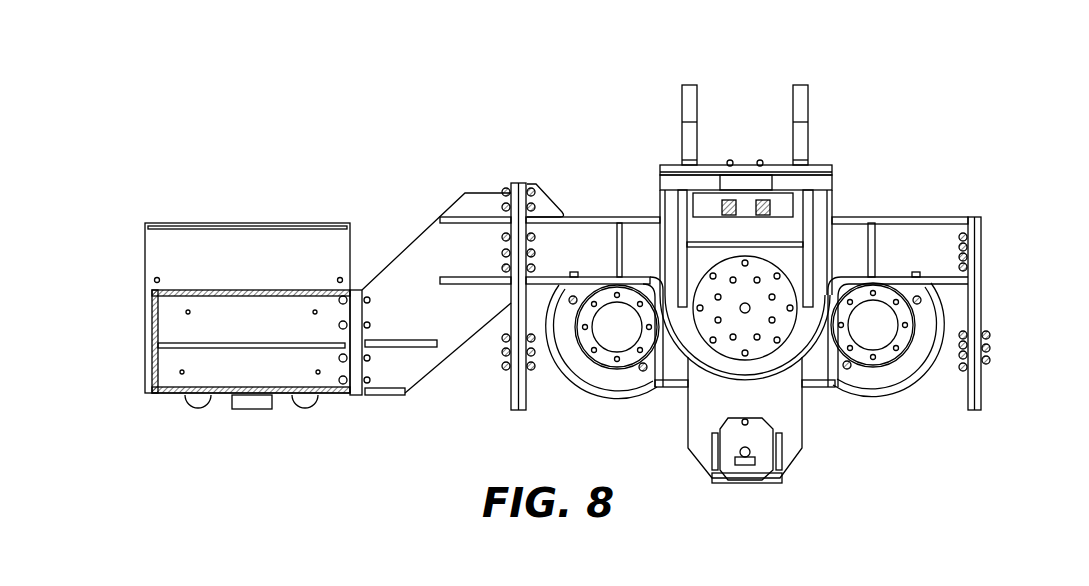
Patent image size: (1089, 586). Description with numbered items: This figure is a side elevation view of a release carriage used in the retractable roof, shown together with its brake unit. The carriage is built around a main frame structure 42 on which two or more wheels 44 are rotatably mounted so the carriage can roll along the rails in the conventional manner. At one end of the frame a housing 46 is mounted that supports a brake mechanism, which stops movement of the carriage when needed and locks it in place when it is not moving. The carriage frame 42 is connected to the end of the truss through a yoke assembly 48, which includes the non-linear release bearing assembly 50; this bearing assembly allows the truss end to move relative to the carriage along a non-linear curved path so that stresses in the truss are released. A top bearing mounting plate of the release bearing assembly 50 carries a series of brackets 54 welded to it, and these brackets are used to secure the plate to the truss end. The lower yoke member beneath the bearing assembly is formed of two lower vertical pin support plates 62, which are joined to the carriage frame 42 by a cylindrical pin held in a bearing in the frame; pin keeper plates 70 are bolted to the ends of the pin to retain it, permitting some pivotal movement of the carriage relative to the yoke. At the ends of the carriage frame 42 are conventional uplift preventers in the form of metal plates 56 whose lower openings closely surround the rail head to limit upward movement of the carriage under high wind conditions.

The main frame structure 42 is at (931, 217).
The wheels 44 is at (613, 393).
The housing 46 is at (188, 236).
The yoke assembly 48 is at (640, 150).
The non-linear release bearing assembly 50 is at (853, 150).
The brackets 54 is at (691, 85).
The metal plates 56 is at (511, 395).
The lower vertical pin support plates 62 is at (778, 363).
The pin keeper plates 70 is at (723, 348).